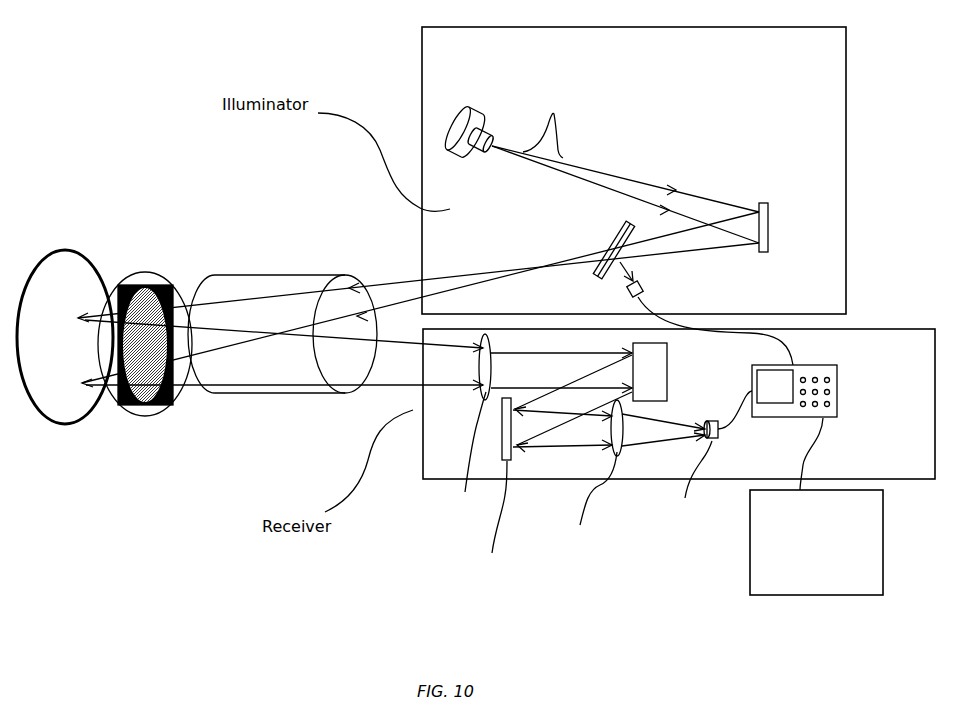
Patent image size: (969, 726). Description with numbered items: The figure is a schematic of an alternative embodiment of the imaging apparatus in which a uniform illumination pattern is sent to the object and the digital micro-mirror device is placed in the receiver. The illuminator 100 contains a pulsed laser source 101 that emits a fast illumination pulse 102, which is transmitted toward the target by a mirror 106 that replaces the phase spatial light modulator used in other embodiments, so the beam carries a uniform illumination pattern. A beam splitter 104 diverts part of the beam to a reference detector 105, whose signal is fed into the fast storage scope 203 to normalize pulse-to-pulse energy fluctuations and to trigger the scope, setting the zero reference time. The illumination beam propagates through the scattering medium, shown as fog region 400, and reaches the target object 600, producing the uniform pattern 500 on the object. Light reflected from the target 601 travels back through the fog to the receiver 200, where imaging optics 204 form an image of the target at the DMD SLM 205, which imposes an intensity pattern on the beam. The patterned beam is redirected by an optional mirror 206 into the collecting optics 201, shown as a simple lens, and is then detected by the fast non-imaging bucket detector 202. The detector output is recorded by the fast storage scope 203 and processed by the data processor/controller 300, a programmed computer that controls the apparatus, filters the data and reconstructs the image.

The illuminator 100 is at (634, 170).
The pulsed laser source 101 is at (471, 133).
The illumination pulse 102 is at (557, 132).
The beam splitter 104 is at (610, 233).
The reference detector 105 is at (661, 287).
The mirror 106 is at (768, 213).
The receiver 200 is at (679, 404).
The collecting optics 201 is at (590, 484).
The bucket detector 202 is at (689, 494).
The fast storage scope 203 is at (828, 395).
The imaging optics 204 is at (471, 438).
The DMD SLM 205 is at (671, 382).
The mirror 206 is at (506, 491).
The data processor/controller 300 is at (816, 542).
The fog region 400 is at (282, 305).
The uniform illumination pattern 500 is at (145, 391).
The target object 600 is at (65, 316).
The target 601 is at (63, 338).